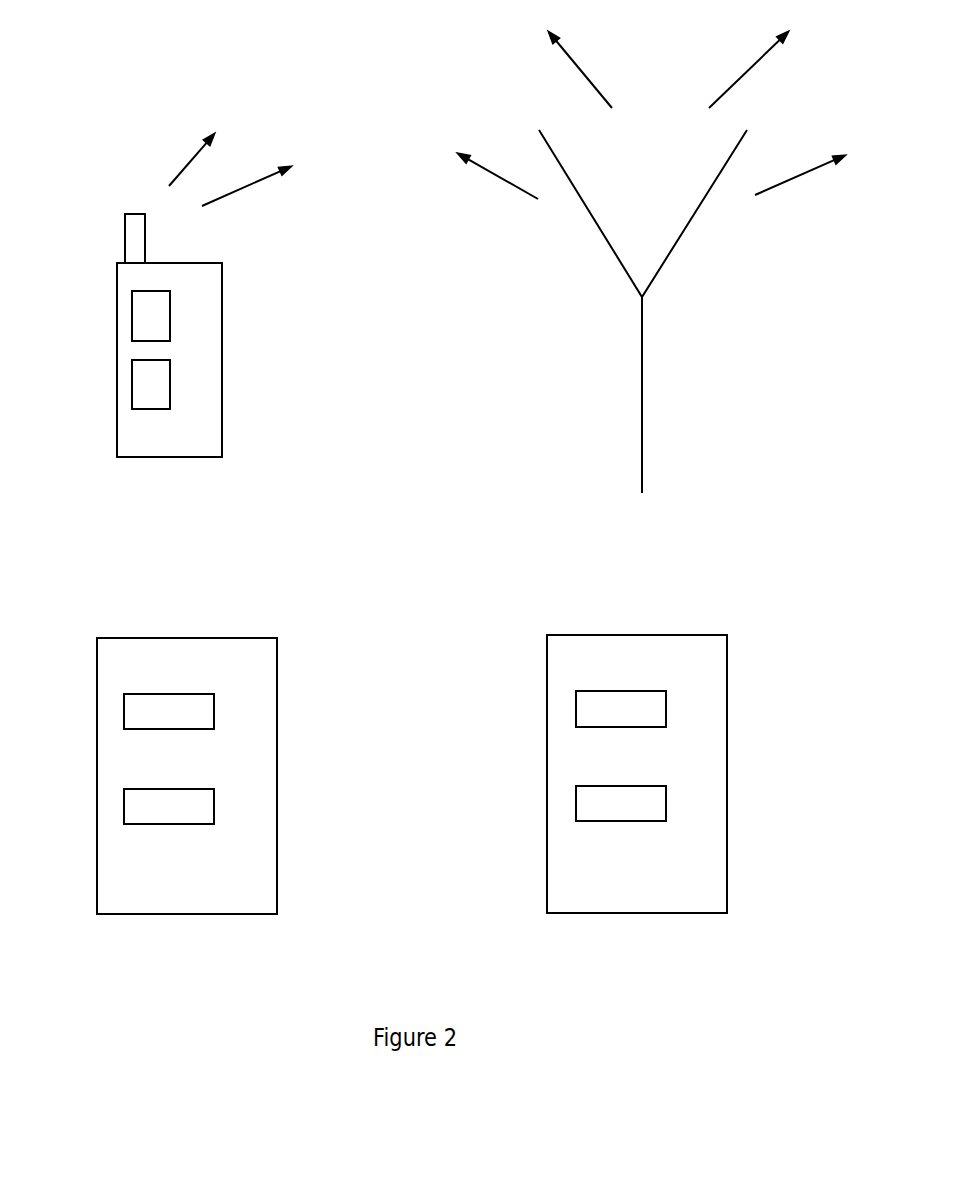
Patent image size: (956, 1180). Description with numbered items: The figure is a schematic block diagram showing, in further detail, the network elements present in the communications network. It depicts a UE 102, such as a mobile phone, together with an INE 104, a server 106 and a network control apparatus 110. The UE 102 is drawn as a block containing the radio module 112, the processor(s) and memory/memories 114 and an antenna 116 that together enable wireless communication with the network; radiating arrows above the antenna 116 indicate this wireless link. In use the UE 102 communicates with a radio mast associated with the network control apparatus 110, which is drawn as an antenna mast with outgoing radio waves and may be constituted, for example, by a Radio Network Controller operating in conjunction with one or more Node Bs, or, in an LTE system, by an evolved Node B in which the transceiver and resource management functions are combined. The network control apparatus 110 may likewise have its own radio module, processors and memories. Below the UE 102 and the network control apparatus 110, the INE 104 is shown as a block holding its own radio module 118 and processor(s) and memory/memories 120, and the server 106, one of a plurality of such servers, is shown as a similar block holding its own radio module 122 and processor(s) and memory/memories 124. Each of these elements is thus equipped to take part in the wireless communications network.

The UE 102 is at (222, 361).
The INE 104 is at (277, 773).
The server 106 is at (727, 770).
The network control apparatus 110 is at (642, 396).
The radio module 112 is at (132, 385).
The processor(s) and memory/memories 114 is at (132, 317).
The antenna 116 is at (126, 238).
The radio module 118 is at (124, 803).
The processor(s) and memory/memories 120 is at (124, 710).
The radio module 122 is at (576, 801).
The processor(s) and memory/memories 124 is at (576, 708).